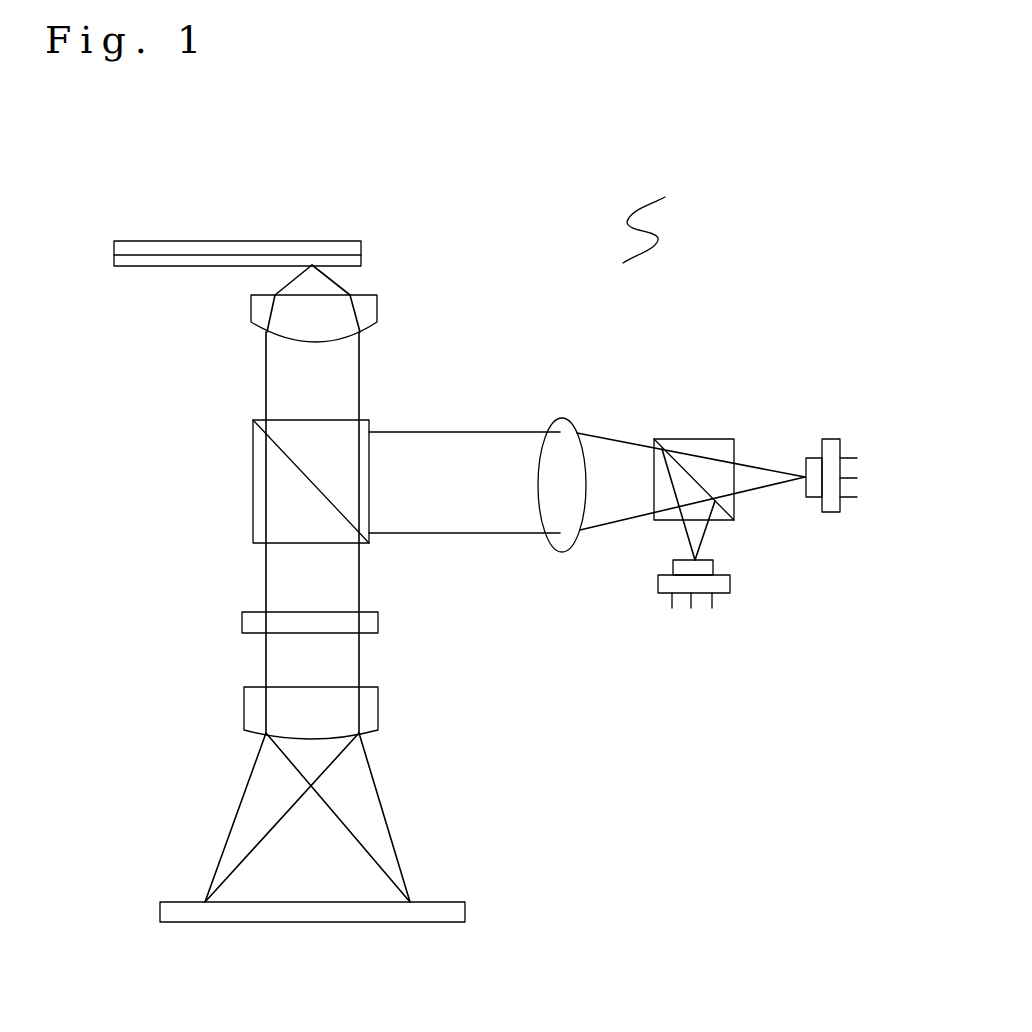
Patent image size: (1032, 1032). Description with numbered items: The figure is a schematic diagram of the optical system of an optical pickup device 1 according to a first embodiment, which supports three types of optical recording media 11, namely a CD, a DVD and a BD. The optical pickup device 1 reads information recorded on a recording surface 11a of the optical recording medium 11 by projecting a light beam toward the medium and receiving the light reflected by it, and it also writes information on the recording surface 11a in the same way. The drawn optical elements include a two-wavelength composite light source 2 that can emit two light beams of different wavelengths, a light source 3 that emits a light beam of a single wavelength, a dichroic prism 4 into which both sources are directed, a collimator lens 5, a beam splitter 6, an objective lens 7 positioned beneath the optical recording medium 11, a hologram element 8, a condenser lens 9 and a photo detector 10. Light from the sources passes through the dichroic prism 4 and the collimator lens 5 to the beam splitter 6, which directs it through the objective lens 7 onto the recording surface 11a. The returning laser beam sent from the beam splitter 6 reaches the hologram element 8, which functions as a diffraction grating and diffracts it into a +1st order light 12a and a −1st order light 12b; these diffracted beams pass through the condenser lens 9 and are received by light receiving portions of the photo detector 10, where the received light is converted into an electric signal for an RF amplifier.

The optical pickup device 1 is at (678, 186).
The two-wavelength composite light source 2 is at (830, 447).
The light source 3 is at (720, 582).
The dichroic prism 4 is at (698, 437).
The collimator lens 5 is at (560, 552).
The beam splitter 6 is at (252, 467).
The objective lens 7 is at (377, 303).
The hologram element 8 is at (242, 622).
The condenser lens 9 is at (243, 723).
The photo detector 10 is at (220, 922).
The optical recording medium 11 is at (158, 240).
The recording surface 11a is at (227, 255).
The +1st order light 12a is at (220, 855).
The −1st order light 12b is at (407, 872).